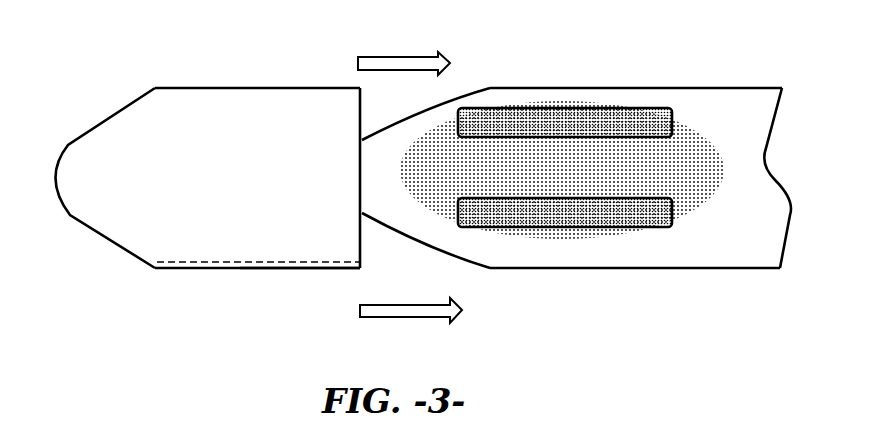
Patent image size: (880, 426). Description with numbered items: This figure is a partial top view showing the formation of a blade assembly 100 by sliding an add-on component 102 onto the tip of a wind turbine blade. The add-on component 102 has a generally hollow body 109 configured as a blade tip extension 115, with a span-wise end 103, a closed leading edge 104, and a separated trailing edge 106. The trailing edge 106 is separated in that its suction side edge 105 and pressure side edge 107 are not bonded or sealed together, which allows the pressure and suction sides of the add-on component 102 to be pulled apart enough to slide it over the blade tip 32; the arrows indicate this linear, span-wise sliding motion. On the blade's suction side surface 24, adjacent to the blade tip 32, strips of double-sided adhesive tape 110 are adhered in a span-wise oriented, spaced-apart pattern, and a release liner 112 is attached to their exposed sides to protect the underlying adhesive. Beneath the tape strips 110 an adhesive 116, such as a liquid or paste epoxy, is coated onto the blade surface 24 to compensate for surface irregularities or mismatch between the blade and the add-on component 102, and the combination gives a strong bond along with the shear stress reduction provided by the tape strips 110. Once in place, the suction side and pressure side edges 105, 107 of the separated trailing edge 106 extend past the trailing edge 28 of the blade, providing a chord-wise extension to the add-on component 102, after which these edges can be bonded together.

The blade assembly 100 is at (576, 168).
The add-on component 102 is at (233, 177).
The span-wise end 103 is at (362, 100).
The closed leading edge 104 is at (210, 88).
The suction side edge 105 is at (188, 270).
The separated trailing edge 106 is at (248, 281).
The pressure side edge 107 is at (295, 261).
The hollow body 109 is at (140, 238).
The double-sided adhesive tape strips 110 is at (550, 138).
The release liner 112 is at (666, 124).
The blade tip extension 115 is at (92, 113).
The adhesive 116 is at (495, 185).
The suction side surface 24 is at (727, 103).
The trailing edge 28 is at (572, 269).
The blade tip 32 is at (420, 249).